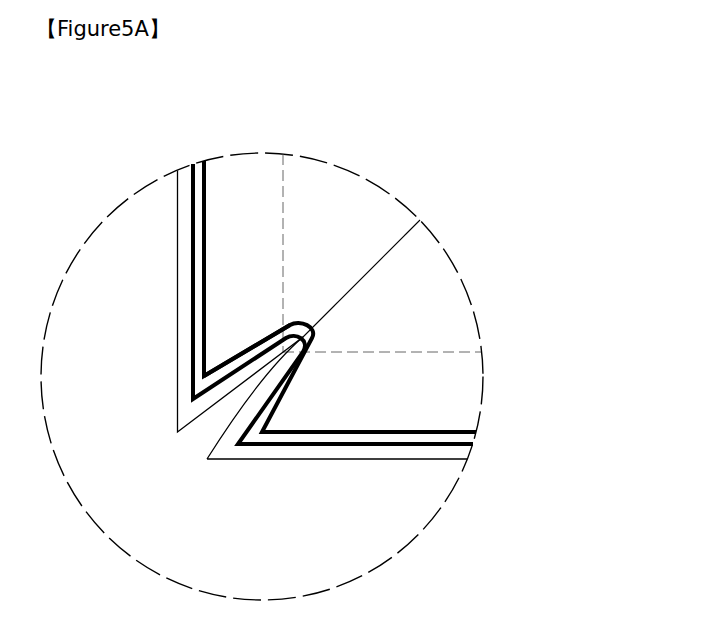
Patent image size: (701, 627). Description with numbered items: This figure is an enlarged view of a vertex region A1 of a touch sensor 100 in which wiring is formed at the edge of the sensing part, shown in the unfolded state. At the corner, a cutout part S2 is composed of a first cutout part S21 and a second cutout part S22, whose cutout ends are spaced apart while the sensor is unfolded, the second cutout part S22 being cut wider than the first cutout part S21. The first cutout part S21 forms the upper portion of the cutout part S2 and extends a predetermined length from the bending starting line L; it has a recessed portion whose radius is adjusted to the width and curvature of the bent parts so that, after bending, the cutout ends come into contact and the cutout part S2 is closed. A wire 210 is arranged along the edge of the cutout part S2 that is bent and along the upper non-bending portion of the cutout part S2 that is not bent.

The display panel 100 is at (337, 345).
The wire 210 is at (293, 448).
The first cutout part S21 is at (240, 364).
The second cutout part S22 is at (193, 418).
The cutout part S2 is at (206, 444).
The bending starting line L is at (402, 352).
The enlarged region A1 is at (278, 127).